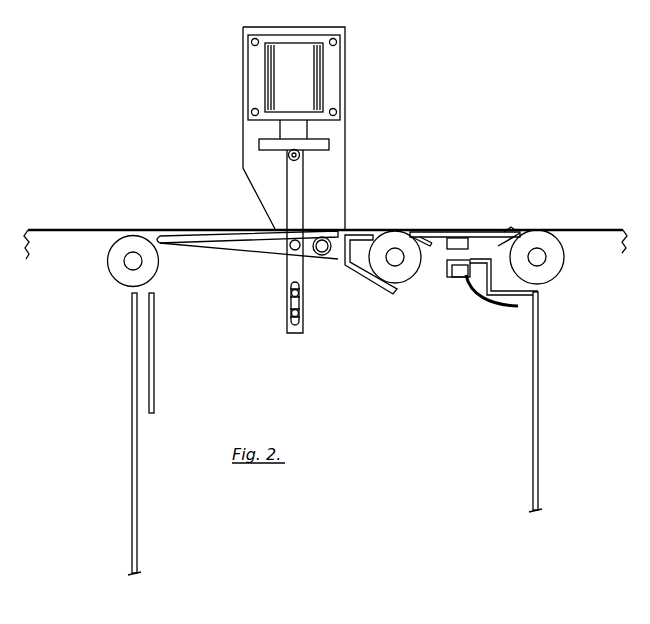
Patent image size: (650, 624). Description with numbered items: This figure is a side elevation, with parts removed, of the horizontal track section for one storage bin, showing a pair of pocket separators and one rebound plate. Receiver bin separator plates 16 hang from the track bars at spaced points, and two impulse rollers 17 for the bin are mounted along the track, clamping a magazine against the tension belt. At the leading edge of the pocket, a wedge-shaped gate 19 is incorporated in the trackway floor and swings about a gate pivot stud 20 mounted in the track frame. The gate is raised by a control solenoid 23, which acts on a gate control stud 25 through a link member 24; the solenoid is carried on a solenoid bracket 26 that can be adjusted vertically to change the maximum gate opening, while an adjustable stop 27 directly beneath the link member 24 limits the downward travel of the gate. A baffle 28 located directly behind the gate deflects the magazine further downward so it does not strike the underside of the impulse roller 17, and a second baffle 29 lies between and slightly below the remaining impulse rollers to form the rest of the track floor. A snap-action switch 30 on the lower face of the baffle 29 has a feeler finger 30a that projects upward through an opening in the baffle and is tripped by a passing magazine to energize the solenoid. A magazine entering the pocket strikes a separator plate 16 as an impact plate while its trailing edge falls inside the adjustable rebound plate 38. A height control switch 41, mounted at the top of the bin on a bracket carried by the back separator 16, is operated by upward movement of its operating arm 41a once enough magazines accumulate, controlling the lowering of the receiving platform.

The receiver bin separator plate 16 is at (131, 341).
The impulse roller 17 is at (136, 240).
The gate 19 is at (238, 254).
The gate pivot stud 20 is at (323, 258).
The control solenoid 23 is at (330, 90).
The link member 24 is at (300, 202).
The gate control stud 25 is at (287, 250).
The solenoid bracket 26 is at (333, 166).
The adjustable stop 27 is at (287, 331).
The baffle 28 is at (380, 288).
The baffle 29 is at (462, 240).
The snap-action switch 30 is at (475, 231).
The feeler finger 30a is at (507, 232).
The adjustable rebound plate 38 is at (155, 343).
The height control switch 41 is at (455, 279).
The operating arm 41a is at (500, 308).